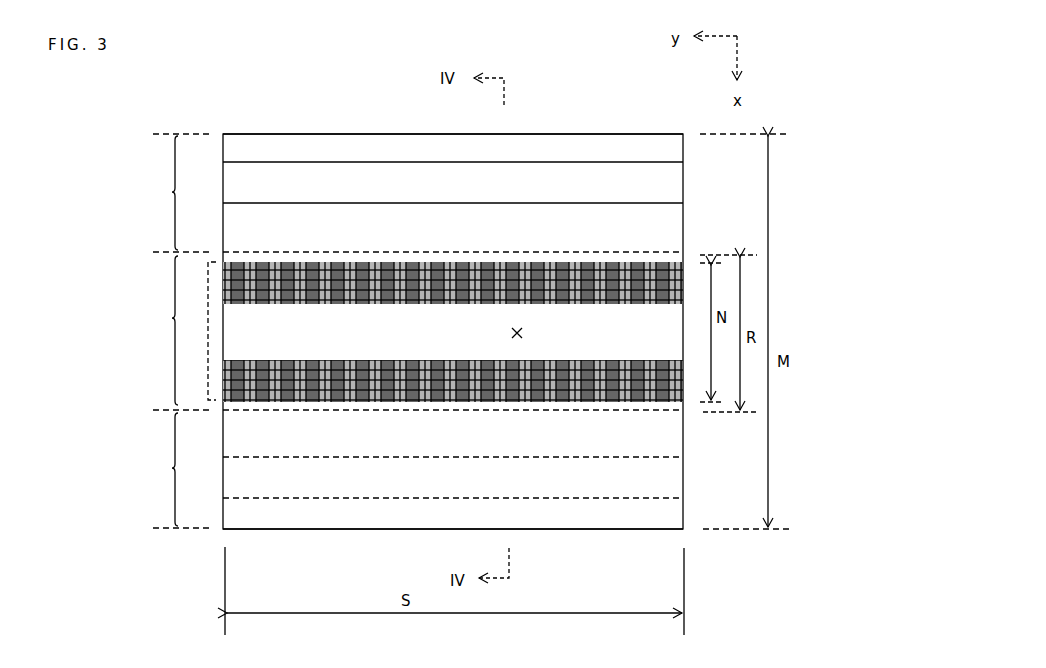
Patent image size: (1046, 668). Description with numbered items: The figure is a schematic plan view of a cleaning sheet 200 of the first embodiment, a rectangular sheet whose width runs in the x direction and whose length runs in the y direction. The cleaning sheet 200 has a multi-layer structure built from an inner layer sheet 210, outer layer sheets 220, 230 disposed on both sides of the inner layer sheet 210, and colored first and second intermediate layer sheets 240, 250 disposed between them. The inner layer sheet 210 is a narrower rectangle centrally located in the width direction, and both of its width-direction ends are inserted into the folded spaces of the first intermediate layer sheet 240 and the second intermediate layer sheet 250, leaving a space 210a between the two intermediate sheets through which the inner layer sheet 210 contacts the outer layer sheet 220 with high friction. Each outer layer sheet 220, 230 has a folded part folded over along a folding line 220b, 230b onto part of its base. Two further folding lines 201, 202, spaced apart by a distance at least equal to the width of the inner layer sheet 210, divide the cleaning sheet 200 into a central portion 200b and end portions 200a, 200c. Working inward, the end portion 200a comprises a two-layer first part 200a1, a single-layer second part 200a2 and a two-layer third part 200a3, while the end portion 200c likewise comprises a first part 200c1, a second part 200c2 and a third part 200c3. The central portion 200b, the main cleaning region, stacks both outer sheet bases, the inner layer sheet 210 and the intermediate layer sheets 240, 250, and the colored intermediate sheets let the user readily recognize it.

The cleaning sheet 200 is at (361, 98).
The end portion 200a is at (405, 192).
The first part 200a1 is at (381, 151).
The second part 200a2 is at (453, 185).
The third part 200a3 is at (520, 228).
The central portion 200b is at (405, 328).
The end portion 200c is at (405, 469).
The first part 200c1 is at (531, 512).
The second part 200c2 is at (456, 478).
The third part 200c3 is at (386, 434).
The folding line 201 is at (601, 251).
The folding line 202 is at (538, 412).
The inner layer sheet 210 is at (198, 343).
The space 210a is at (524, 333).
The outer layer sheet 220 is at (284, 125).
The folding line 220b is at (594, 134).
The outer layer sheet 230 is at (588, 540).
The folding line 230b is at (334, 530).
The first intermediate layer sheet 240 is at (327, 278).
The second intermediate layer sheet 250 is at (320, 390).